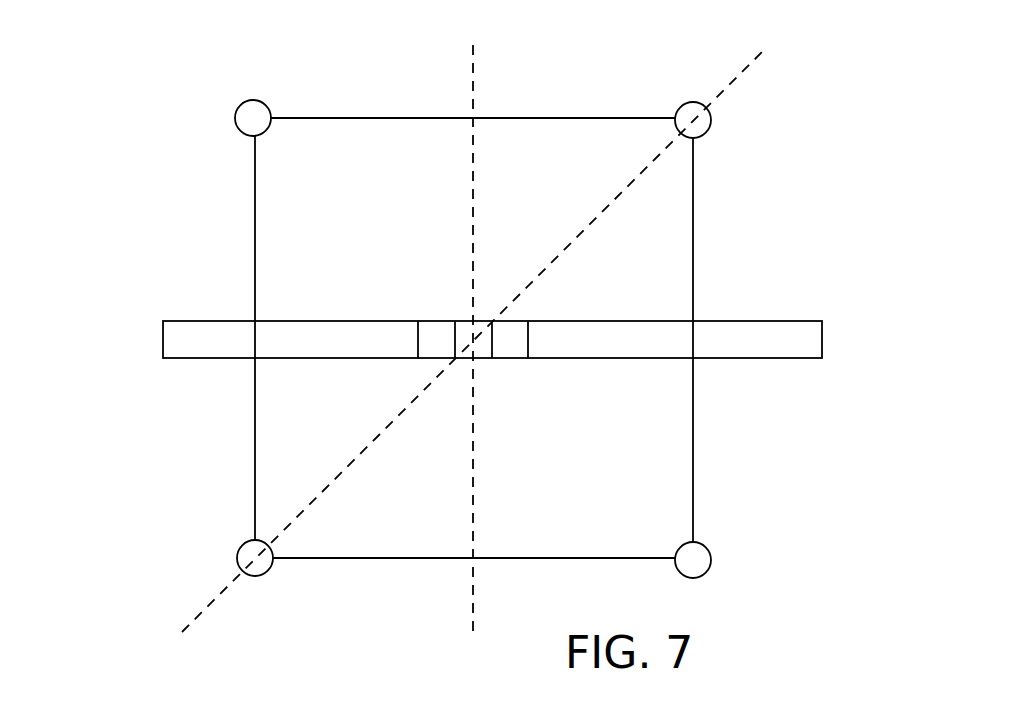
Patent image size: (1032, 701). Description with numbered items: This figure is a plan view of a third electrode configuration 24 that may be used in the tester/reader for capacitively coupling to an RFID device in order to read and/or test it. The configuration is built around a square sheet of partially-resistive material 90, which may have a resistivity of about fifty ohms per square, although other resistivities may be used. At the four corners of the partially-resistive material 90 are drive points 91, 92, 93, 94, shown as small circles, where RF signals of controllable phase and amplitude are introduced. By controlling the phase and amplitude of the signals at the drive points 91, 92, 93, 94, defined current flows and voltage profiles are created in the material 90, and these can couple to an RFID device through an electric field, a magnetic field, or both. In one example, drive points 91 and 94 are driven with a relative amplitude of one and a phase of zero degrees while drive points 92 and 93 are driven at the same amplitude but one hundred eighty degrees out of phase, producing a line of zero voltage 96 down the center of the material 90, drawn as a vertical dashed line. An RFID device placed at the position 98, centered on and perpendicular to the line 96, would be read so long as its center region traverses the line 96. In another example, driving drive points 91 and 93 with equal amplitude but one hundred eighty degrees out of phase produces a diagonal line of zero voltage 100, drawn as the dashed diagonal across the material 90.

The electrode configuration 24 is at (190, 120).
The partially-resistive material 90 is at (675, 231).
The drive point 91 is at (253, 118).
The drive point 92 is at (710, 130).
The drive point 93 is at (693, 568).
The drive point 94 is at (260, 568).
The line of zero voltage 96 is at (473, 58).
The position 98 is at (773, 321).
The diagonal line of zero voltage 100 is at (750, 63).